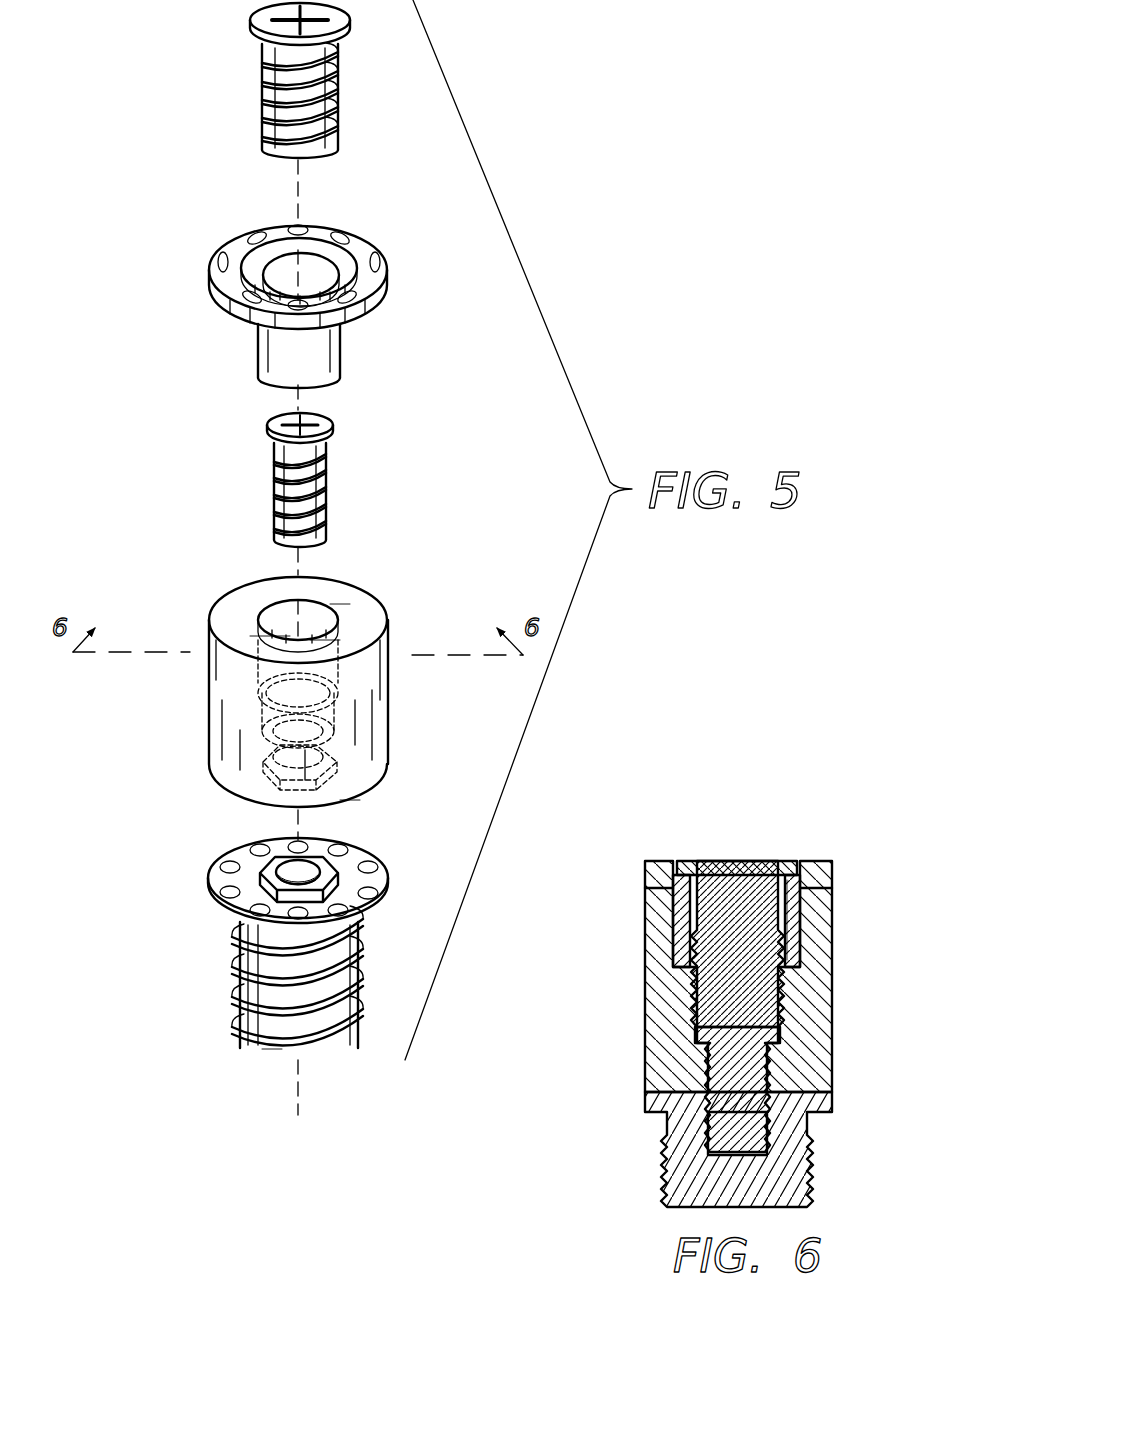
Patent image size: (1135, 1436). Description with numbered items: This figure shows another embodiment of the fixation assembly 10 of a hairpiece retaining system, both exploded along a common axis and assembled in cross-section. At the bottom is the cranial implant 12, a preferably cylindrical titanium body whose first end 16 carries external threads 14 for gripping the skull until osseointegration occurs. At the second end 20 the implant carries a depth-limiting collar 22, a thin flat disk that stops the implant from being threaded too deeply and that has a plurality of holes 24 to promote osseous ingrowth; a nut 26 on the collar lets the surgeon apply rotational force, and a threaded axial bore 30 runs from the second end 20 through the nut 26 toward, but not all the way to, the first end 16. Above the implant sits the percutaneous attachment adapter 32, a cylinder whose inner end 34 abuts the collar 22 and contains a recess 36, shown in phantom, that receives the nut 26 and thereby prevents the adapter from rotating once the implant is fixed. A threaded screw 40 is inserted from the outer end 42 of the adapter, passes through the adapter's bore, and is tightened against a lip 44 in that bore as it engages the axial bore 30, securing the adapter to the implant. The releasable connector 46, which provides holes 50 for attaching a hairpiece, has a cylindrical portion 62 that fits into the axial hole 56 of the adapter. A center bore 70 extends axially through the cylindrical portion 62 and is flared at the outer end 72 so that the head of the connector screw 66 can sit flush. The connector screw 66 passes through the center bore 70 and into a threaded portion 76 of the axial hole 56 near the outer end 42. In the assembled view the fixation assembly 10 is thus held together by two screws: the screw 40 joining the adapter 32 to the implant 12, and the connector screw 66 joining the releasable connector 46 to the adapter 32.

In FIG. 5, the fixation assembly 10 is at (95, 748).
In FIG. 6, the fixation assembly 10 is at (568, 1036).
In FIG. 5, the cranial implant 12 is at (240, 955).
In FIG. 6, the cranial implant 12 is at (795, 1148).
In FIG. 5, the external threads 14 is at (245, 1012).
In FIG. 5, the first end 16 is at (270, 1052).
In FIG. 5, the second end 20 is at (360, 905).
In FIG. 5, the depth-limiting collar 22 is at (248, 843).
In FIG. 5, the holes 24 is at (350, 875).
In FIG. 5, the nut 26 is at (332, 848).
In FIG. 5, the axial bore 30 is at (262, 873).
In FIG. 5, the attachment adapter 32 is at (370, 730).
In FIG. 6, the attachment adapter 32 is at (650, 992).
In FIG. 5, the inner end 34 is at (365, 795).
In FIG. 5, the recess 36 is at (265, 770).
In FIG. 5, the screw 40 is at (312, 490).
In FIG. 6, the screw 40 is at (750, 1085).
In FIG. 5, the outer end 42 is at (363, 607).
In FIG. 6, the lip 44 is at (710, 1052).
In FIG. 5, the releasable connector 46 is at (318, 232).
In FIG. 6, the releasable connector 46 is at (813, 860).
In FIG. 5, the holes 50 is at (385, 262).
In FIG. 5, the axial hole 56 is at (265, 607).
In FIG. 5, the cylindrical portion 62 is at (290, 372).
In FIG. 5, the connector screw 66 is at (332, 98).
In FIG. 5, the center bore 70 is at (250, 270).
In FIG. 6, the center bore 70 is at (790, 903).
In FIG. 5, the outer end 72 is at (278, 250).
In FIG. 5, the threaded portion 76 is at (262, 712).
In FIG. 6, the threaded portion 76 is at (782, 987).